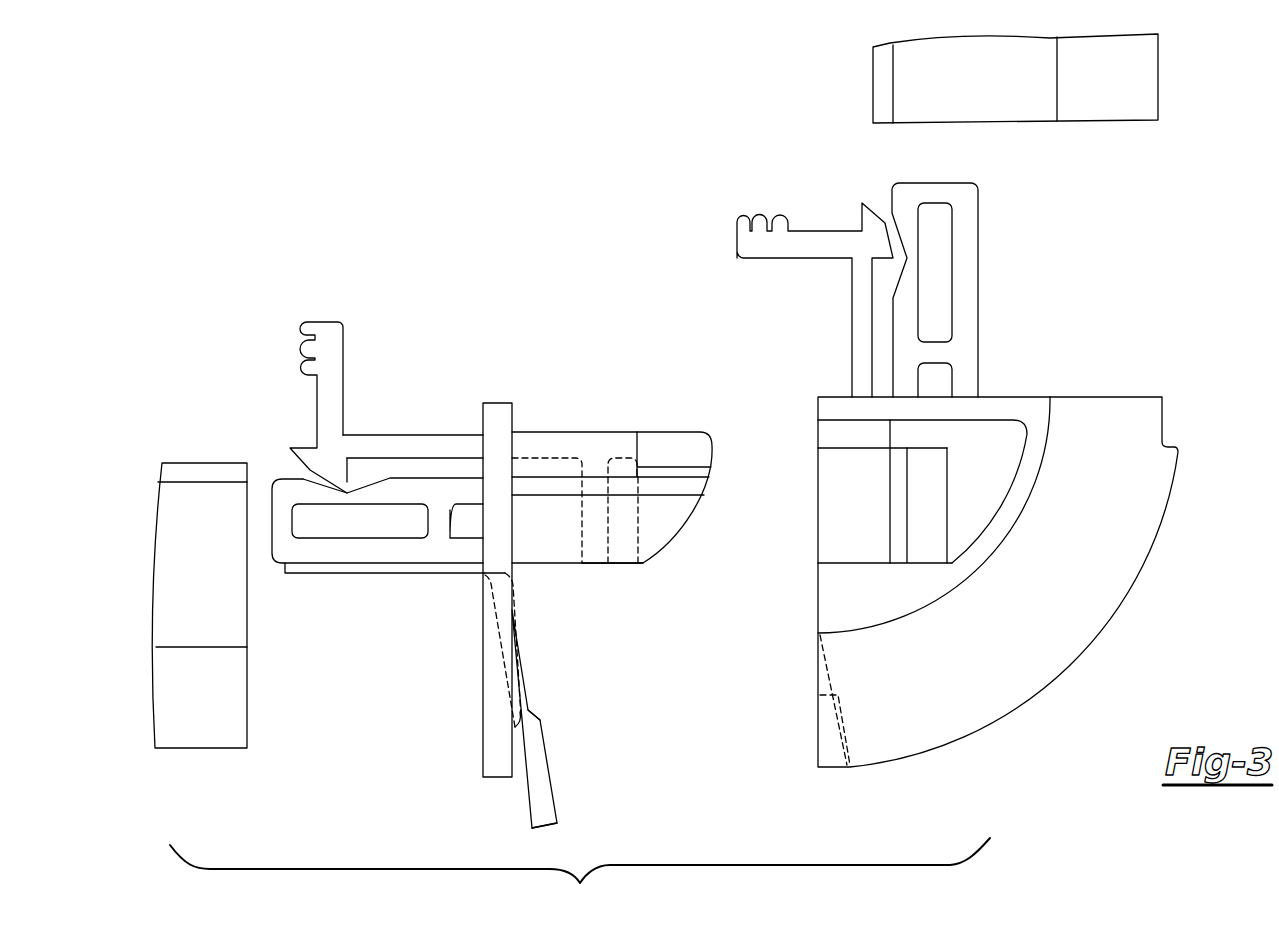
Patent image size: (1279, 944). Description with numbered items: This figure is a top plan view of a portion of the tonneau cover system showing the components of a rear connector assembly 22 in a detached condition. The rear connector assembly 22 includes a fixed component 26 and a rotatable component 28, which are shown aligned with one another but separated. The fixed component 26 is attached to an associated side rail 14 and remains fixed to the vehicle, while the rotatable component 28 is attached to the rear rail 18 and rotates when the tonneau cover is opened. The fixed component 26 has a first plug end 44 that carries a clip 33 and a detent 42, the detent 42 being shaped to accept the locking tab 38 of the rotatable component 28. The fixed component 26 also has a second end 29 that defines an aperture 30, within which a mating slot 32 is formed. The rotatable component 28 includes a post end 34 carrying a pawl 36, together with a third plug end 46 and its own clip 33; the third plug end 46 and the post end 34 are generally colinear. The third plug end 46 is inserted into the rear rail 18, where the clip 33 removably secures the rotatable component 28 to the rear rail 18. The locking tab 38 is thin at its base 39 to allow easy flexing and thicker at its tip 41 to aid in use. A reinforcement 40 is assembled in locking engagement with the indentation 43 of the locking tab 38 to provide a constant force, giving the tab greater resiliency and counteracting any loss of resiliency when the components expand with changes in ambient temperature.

The side rail 14 is at (1143, 91).
The rear rail 18 is at (232, 686).
The rear connector assembly 22 is at (580, 878).
The fixed component 26 is at (1145, 595).
The rotatable component 28 is at (262, 340).
The second end 29 is at (833, 463).
The aperture 30 is at (833, 538).
The mating slot 32 is at (932, 540).
The clip 33 is at (310, 325).
The post end 34 is at (620, 443).
The pawl 36 is at (595, 548).
The locking tab 38 is at (547, 798).
The base 39 is at (508, 572).
The reinforcement 40 is at (503, 632).
The tip 41 is at (543, 827).
The detent 42 is at (828, 738).
The indentation 43 is at (528, 713).
The first plug end 44 is at (965, 350).
The third plug end 46 is at (443, 497).